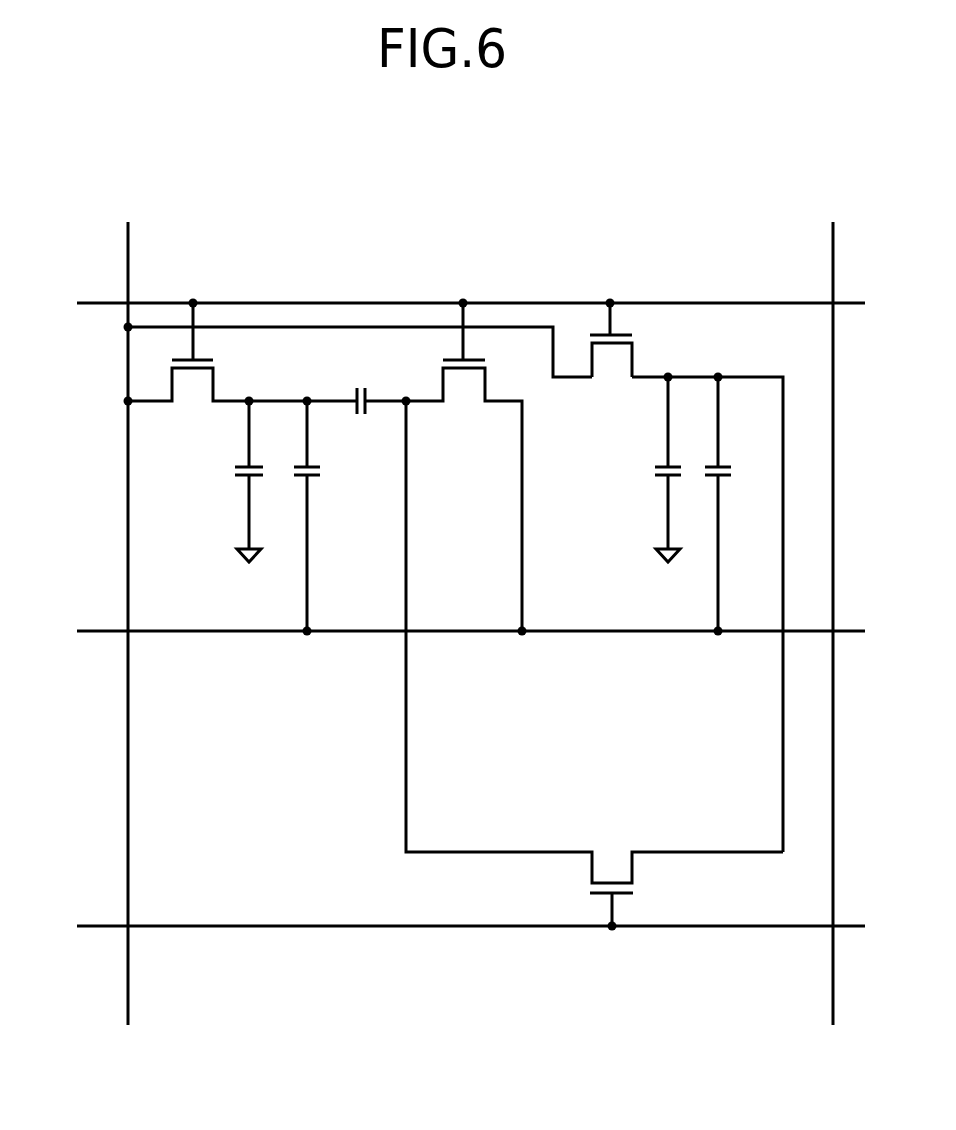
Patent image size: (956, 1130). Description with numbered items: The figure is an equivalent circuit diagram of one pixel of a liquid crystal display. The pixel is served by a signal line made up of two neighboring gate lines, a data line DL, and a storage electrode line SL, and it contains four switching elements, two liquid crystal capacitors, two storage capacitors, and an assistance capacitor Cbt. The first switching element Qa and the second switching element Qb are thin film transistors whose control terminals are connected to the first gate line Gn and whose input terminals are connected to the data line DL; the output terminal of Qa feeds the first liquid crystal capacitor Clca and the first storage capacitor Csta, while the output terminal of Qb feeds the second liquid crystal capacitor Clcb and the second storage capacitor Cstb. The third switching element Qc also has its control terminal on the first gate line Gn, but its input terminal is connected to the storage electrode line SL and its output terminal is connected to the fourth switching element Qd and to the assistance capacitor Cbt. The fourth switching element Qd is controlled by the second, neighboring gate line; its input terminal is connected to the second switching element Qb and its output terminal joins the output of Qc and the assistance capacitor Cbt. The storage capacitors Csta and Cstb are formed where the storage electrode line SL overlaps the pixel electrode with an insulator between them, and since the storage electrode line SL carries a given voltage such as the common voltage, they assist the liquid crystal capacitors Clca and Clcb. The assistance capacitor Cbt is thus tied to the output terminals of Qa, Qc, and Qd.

The data line DL is at (126, 606).
The first gate line Gn is at (444, 306).
The storage electrode line SL is at (447, 632).
The first switching element Qa is at (242, 352).
The second switching element Qb is at (630, 340).
The third switching element Qc is at (464, 467).
The fourth switching element Qd is at (594, 663).
The assistance capacitor Cbt is at (374, 383).
The first liquid crystal capacitor Clca is at (224, 481).
The first storage capacitor Csta is at (336, 516).
The second liquid crystal capacitor Clcb is at (639, 469).
The second storage capacitor Cstb is at (742, 504).